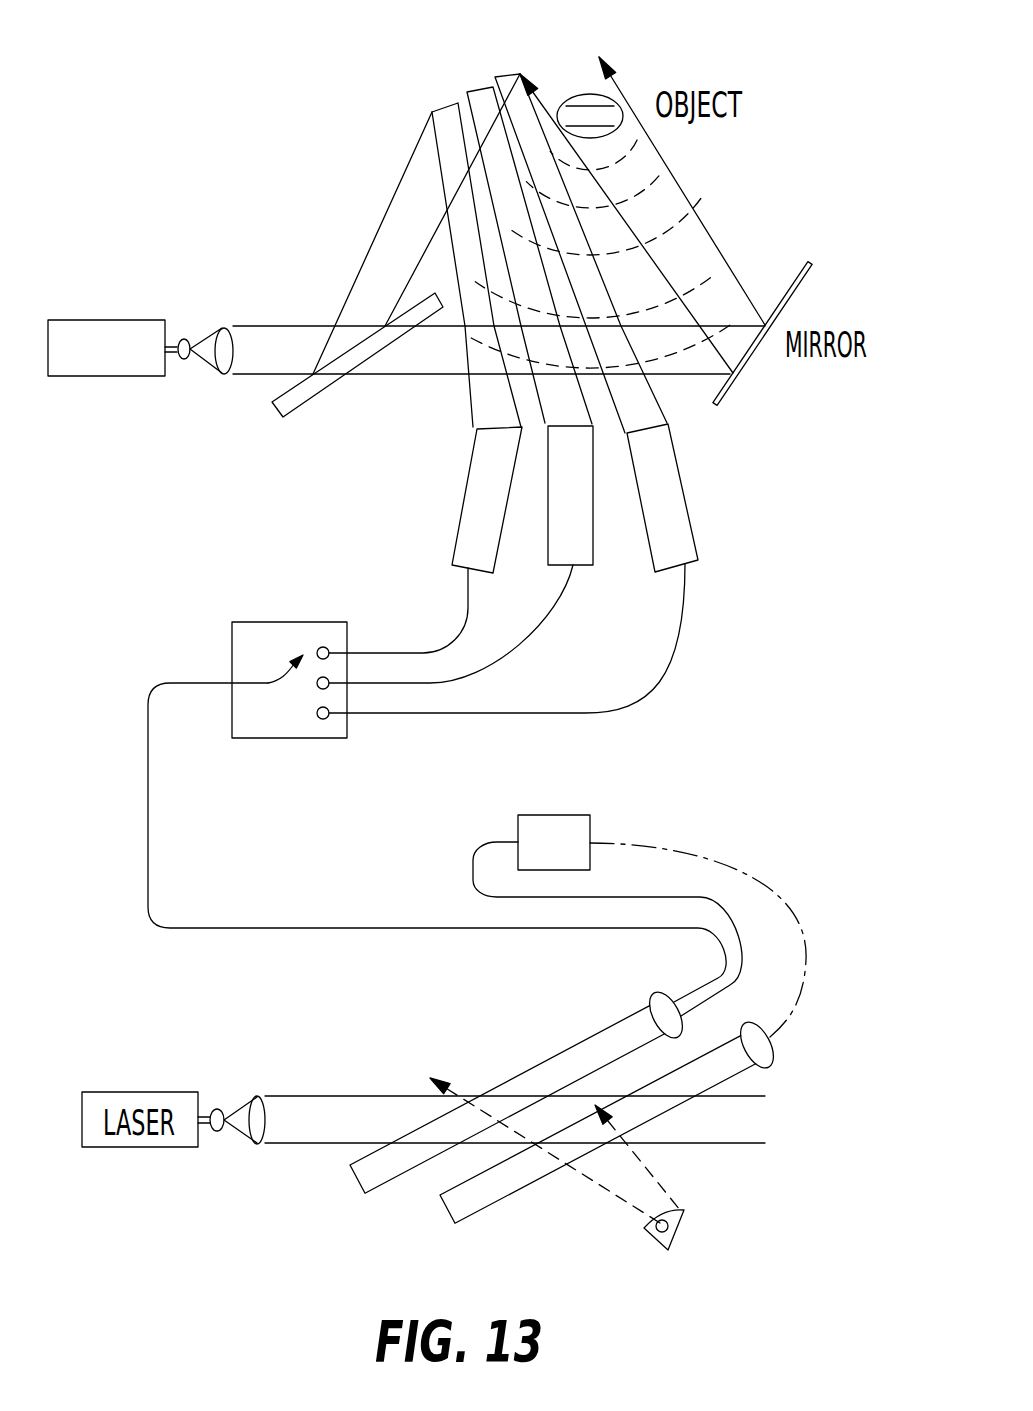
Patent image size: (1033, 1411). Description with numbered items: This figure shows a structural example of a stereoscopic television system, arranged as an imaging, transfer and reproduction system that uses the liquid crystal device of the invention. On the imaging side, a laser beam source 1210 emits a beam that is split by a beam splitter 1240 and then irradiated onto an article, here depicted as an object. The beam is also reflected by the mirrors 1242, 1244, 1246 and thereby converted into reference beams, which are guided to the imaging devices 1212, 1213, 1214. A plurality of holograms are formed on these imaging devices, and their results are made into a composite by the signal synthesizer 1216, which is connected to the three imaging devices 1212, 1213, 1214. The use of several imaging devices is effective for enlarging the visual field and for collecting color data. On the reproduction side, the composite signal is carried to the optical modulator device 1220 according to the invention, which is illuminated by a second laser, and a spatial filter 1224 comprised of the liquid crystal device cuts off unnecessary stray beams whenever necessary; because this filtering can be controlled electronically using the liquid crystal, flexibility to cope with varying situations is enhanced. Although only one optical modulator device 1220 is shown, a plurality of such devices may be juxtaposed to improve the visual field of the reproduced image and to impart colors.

The laser beam source 1210 is at (108, 324).
The imaging device 1212 is at (458, 532).
The imaging device 1213 is at (587, 565).
The imaging device 1214 is at (686, 527).
The signal synthesizer 1216 is at (273, 740).
The optical modulator device 1220 is at (532, 1066).
The spatial filter 1224 is at (520, 1190).
The beam splitter 1240 is at (300, 407).
The mirror 1242 is at (440, 106).
The mirror 1244 is at (476, 88).
The mirror 1246 is at (500, 75).